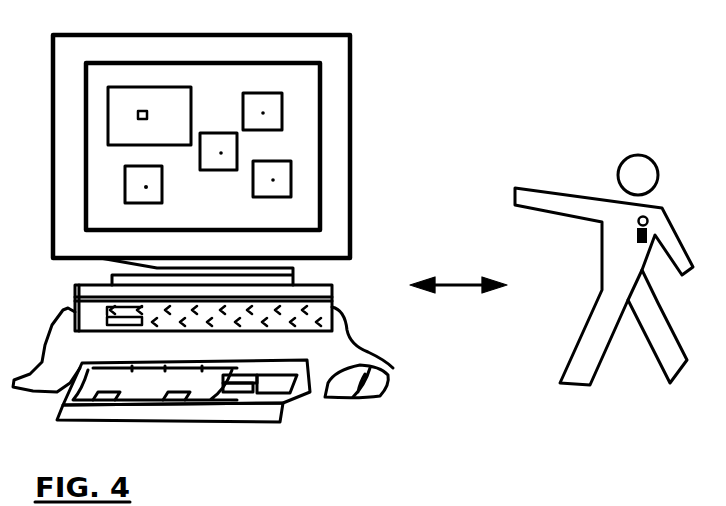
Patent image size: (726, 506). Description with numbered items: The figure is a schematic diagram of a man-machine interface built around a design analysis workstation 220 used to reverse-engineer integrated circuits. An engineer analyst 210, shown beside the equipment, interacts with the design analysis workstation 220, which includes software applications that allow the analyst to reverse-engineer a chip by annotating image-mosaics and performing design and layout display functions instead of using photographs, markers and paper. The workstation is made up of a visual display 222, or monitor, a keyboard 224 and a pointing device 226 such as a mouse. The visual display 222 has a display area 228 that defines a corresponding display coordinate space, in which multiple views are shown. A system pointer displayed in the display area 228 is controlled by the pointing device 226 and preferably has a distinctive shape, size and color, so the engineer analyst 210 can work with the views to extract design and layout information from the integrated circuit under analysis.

The engineer analyst 210 is at (588, 193).
The design analysis workstation 220 is at (433, 145).
The visual display 222 is at (333, 47).
The keyboard 224 is at (315, 396).
The pointing device 226 is at (388, 378).
The display area 228 is at (300, 210).